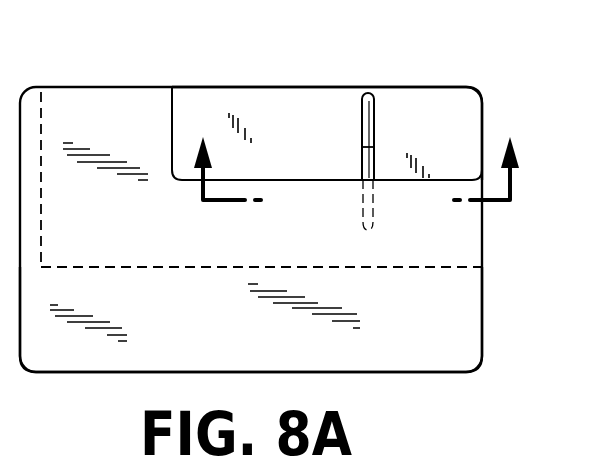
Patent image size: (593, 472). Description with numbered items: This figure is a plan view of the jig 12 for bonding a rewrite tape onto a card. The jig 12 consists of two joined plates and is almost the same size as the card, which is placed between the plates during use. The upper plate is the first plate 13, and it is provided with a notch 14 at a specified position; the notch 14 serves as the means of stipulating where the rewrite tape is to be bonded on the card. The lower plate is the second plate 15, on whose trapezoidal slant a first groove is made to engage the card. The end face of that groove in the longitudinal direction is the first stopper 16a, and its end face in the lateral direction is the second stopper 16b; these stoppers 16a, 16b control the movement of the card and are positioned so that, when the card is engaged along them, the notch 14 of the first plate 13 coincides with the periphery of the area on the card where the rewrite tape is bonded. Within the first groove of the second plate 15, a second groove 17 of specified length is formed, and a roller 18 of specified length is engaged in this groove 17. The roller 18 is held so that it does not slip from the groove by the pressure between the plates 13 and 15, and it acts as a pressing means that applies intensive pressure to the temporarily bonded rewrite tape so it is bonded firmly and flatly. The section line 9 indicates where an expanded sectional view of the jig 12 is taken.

The jig for bonding the rewrite tape 12 is at (86, 372).
The first plate 13 is at (467, 334).
The notch 14 is at (298, 178).
The second plate 15 is at (452, 100).
The first stopper 16a is at (460, 268).
The second stopper 16b is at (42, 118).
The second groove 17 is at (376, 146).
The roller 18 is at (376, 113).
The section line 9— 9 is at (356, 152).